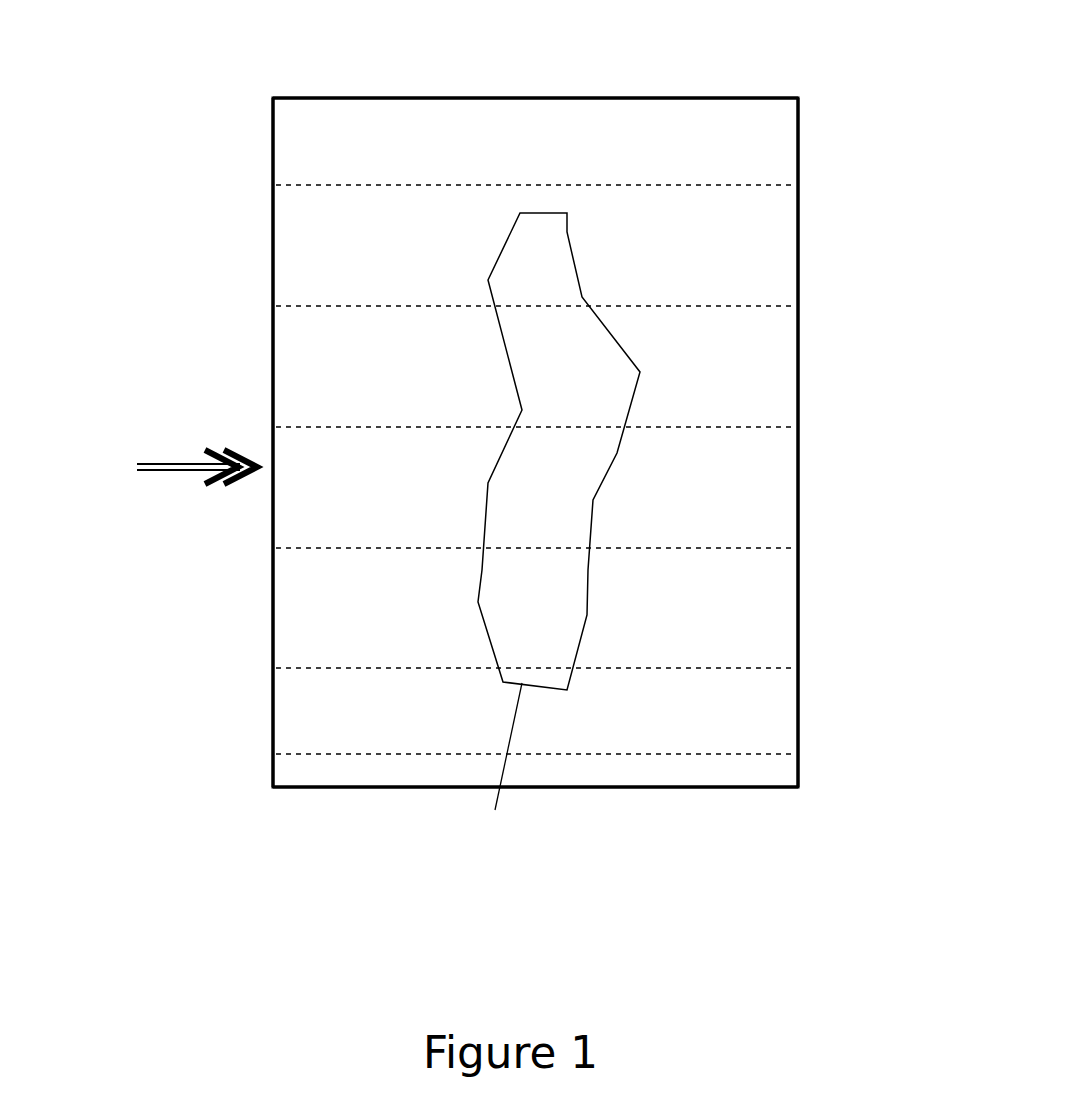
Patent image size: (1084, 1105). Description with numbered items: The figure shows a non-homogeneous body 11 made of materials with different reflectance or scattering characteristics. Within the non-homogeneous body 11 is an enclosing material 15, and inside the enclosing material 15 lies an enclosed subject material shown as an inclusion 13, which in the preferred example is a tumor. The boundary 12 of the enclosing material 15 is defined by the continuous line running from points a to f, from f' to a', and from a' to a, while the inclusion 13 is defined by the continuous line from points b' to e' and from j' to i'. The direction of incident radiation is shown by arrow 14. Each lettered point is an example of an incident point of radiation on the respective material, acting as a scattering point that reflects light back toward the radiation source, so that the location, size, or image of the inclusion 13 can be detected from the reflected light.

The non-homogeneous body 11 is at (853, 83).
The boundary 12 is at (488, 98).
The inclusion 13 is at (557, 585).
The arrow 14 is at (188, 470).
The enclosing material 15 is at (728, 506).